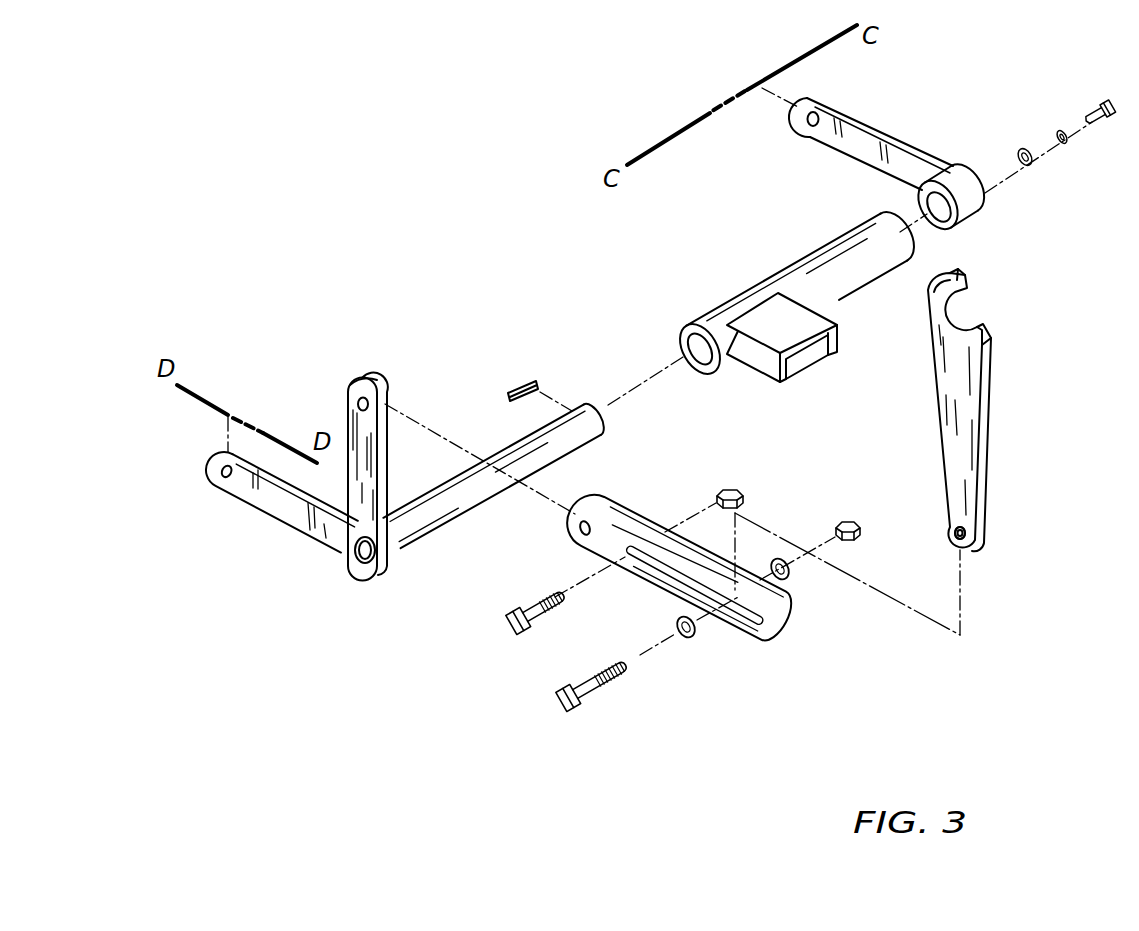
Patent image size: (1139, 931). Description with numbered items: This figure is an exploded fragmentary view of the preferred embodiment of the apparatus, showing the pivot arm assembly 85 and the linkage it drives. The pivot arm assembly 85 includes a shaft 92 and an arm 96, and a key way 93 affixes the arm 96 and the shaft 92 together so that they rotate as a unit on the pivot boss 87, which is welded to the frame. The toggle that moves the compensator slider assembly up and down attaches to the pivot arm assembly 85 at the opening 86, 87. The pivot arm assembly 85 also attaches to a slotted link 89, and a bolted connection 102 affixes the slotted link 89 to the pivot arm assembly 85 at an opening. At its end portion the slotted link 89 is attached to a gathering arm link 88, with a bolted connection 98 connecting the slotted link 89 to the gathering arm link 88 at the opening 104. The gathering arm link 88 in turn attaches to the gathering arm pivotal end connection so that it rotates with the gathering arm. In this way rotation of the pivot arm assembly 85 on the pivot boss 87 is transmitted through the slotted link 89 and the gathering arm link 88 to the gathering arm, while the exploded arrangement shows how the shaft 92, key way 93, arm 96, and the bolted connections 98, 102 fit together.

The pivot arm assembly 85 is at (896, 163).
The opening 86 is at (823, 127).
The pivot boss 87 is at (758, 278).
The gathering arm link 88 is at (955, 410).
The slotted link 89 is at (770, 637).
The shaft 92 is at (473, 492).
The key way 93 is at (532, 380).
The arm 96 is at (273, 515).
The bolted connection 98 is at (560, 703).
The bolted connection 102 is at (510, 623).
The opening 104 is at (970, 547).